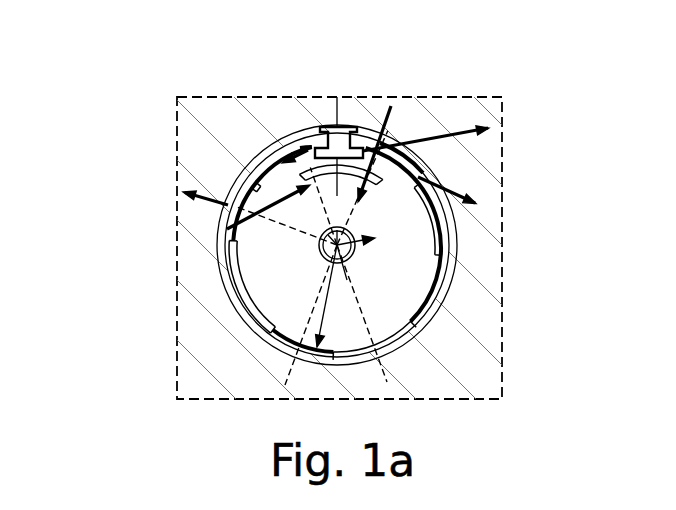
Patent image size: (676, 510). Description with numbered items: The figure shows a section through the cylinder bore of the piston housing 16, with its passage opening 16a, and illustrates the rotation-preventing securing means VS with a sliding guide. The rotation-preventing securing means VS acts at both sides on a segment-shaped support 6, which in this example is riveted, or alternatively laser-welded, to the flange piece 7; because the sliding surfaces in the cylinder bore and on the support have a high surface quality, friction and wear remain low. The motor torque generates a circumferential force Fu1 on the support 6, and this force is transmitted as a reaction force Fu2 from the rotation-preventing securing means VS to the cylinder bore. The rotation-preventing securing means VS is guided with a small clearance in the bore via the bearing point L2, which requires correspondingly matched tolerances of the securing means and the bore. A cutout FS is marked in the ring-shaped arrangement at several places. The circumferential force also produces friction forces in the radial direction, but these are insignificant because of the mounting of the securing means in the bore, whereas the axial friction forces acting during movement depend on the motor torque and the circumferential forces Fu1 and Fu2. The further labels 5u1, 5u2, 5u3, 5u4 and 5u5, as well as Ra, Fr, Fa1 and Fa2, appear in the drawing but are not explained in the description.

The ring segment 5u1 is at (440, 270).
The ring segment 5u2 is at (311, 352).
The ring segment 5u3 is at (400, 158).
The ring segment 5u4 is at (232, 220).
The ring segment 5u5 is at (266, 157).
The support of rotation-preventing securing means 6 is at (302, 128).
The flange with support 7 is at (240, 165).
The piston housing 16 is at (456, 212).
The passage opening through the piston housing 16a is at (448, 228).
The cutout FS is at (241, 292).
The rotation-preventing securing means VS is at (265, 324).
The second bearing on rotation-preventing securing means L2 is at (305, 181).
The radius Ra is at (335, 296).
The radial force Fr is at (395, 105).
The axial force component Fa1 is at (449, 136).
The axial force component Fa2 is at (237, 208).
The circumferential force corresponding to motor torque Fu1 is at (458, 186).
The support of the circumferential force Fu2 is at (284, 165).